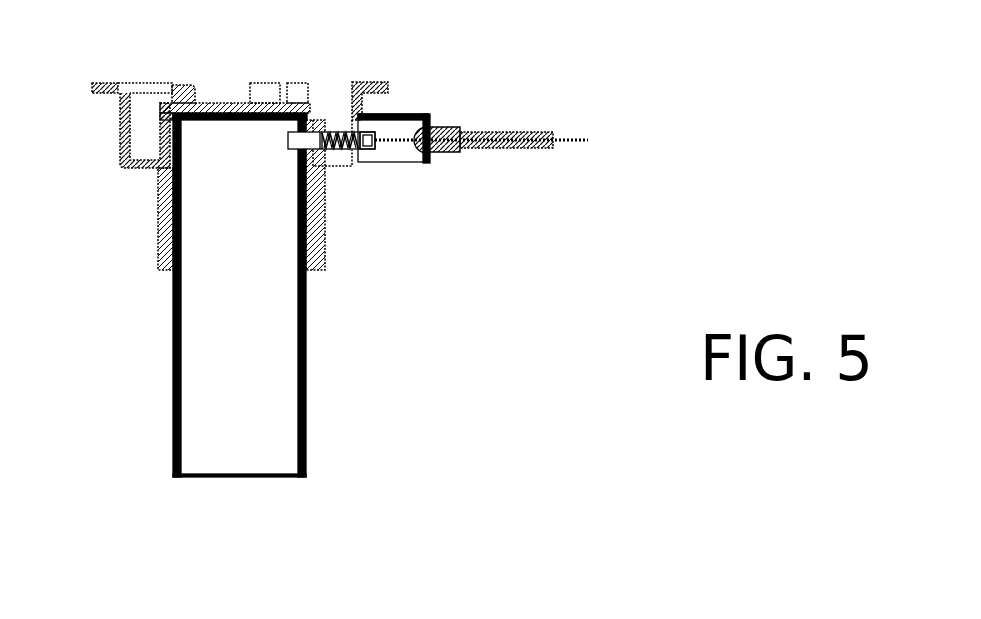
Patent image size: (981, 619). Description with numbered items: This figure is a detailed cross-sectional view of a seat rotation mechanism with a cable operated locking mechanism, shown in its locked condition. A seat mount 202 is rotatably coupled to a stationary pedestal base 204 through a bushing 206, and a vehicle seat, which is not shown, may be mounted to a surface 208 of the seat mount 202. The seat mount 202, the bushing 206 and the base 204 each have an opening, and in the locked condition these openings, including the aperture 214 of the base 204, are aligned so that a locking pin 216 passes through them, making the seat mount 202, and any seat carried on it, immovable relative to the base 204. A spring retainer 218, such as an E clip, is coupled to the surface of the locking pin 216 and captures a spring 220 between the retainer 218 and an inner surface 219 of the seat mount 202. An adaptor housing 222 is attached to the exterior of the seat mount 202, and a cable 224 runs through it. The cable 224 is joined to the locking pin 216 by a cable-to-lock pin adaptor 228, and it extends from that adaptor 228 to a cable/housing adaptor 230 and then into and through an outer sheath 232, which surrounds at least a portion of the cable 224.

The seat mount 202 is at (120, 108).
The pedestal base 204 is at (173, 368).
The bushing 206 is at (173, 272).
The surface 208 is at (108, 83).
The aperture 214 is at (290, 150).
The locking pin 216 is at (288, 142).
The spring retainer 218 is at (320, 130).
The inner surface 219 is at (352, 87).
The spring 220 is at (338, 152).
The adaptor housing 222 is at (385, 115).
The cable 224 is at (573, 140).
The cable-to-lock pin adaptor 228 is at (367, 152).
The cable/housing adaptor 230 is at (445, 155).
The outer sheath 232 is at (502, 150).